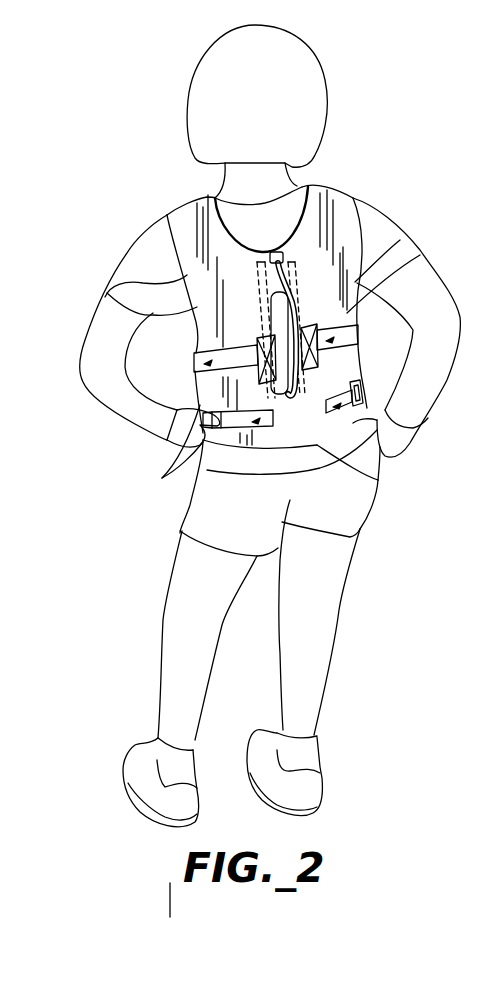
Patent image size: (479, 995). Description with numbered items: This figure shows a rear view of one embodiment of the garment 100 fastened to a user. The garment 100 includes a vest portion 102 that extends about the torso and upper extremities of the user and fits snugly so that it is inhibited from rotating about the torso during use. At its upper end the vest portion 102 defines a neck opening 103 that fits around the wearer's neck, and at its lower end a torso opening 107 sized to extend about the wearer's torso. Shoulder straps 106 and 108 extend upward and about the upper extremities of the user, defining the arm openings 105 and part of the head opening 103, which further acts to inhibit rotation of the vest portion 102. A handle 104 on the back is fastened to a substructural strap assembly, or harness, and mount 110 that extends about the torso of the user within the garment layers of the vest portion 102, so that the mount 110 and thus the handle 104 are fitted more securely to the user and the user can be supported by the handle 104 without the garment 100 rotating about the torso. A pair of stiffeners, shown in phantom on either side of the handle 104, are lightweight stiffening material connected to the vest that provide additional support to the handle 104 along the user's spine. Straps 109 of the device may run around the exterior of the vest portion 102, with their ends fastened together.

The garment 100 is at (173, 185).
The vest portion 102 is at (363, 241).
The neck opening 103 is at (290, 185).
The handle 104 is at (318, 325).
The arm openings 105 is at (118, 261).
The shoulder strap 106 is at (353, 199).
The torso opening 107 is at (378, 480).
The shoulder strap 108 is at (180, 230).
The straps 109 is at (162, 478).
The mount 110 is at (420, 255).